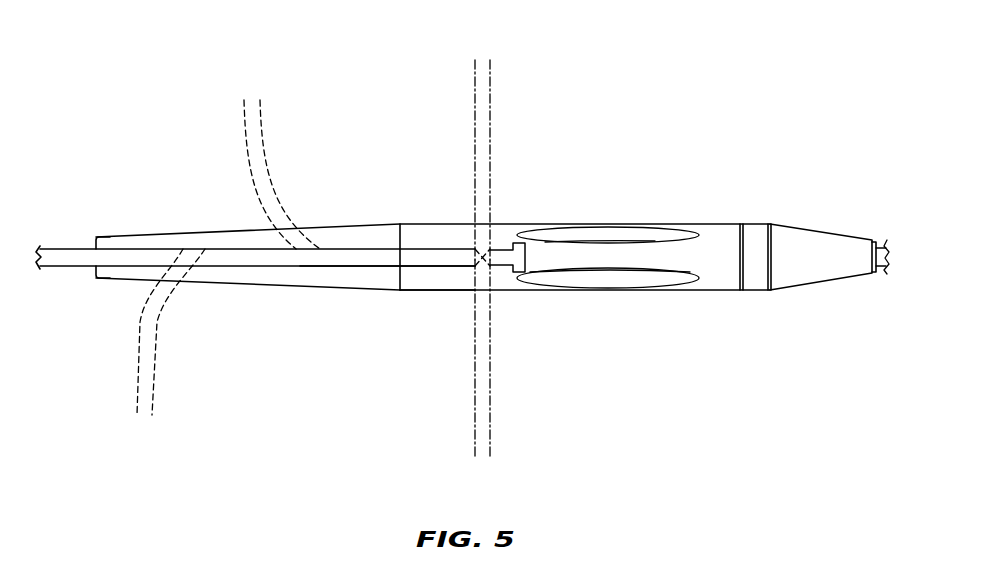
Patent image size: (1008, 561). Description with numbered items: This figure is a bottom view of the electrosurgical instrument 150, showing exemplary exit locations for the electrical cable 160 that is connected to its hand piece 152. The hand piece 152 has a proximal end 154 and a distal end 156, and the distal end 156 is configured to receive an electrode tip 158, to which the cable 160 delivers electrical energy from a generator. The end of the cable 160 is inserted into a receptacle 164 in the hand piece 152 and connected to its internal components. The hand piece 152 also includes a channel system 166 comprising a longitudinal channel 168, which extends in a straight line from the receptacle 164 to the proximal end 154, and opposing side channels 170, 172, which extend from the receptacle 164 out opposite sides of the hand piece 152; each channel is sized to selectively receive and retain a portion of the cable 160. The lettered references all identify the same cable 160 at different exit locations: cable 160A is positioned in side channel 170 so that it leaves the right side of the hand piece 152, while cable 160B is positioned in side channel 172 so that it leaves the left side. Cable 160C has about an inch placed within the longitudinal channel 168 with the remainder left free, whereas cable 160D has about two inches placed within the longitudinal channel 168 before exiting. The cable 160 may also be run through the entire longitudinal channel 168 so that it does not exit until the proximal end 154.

The electrosurgical instrument 150 is at (740, 122).
The hand piece 152 is at (670, 228).
The proximal end 154 is at (127, 280).
The distal end 156 is at (832, 233).
The electrode tip 158 is at (882, 266).
The cable 160 is at (77, 248).
The cable 160A is at (488, 121).
The cable 160B is at (488, 381).
The cable 160C is at (258, 144).
The cable 160D is at (146, 344).
The receptacle 164 is at (535, 254).
The channel system 166 is at (444, 270).
The longitudinal channel 168 is at (344, 261).
The side channel 170 is at (493, 240).
The side channel 172 is at (494, 272).